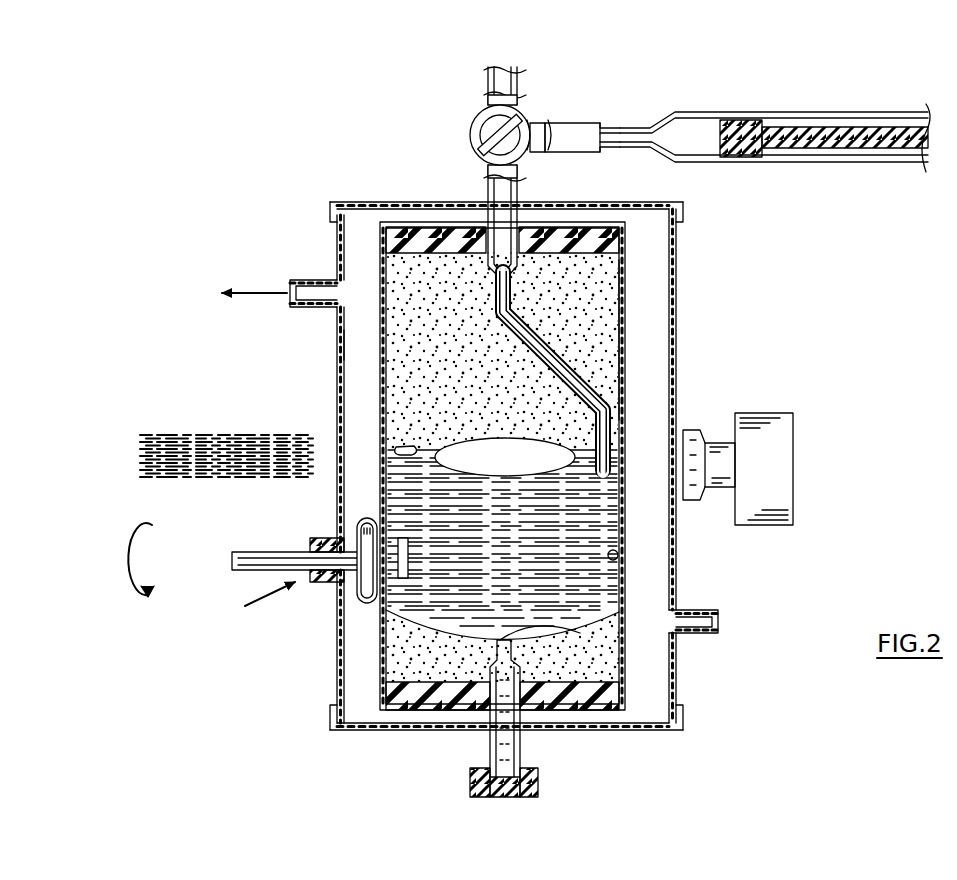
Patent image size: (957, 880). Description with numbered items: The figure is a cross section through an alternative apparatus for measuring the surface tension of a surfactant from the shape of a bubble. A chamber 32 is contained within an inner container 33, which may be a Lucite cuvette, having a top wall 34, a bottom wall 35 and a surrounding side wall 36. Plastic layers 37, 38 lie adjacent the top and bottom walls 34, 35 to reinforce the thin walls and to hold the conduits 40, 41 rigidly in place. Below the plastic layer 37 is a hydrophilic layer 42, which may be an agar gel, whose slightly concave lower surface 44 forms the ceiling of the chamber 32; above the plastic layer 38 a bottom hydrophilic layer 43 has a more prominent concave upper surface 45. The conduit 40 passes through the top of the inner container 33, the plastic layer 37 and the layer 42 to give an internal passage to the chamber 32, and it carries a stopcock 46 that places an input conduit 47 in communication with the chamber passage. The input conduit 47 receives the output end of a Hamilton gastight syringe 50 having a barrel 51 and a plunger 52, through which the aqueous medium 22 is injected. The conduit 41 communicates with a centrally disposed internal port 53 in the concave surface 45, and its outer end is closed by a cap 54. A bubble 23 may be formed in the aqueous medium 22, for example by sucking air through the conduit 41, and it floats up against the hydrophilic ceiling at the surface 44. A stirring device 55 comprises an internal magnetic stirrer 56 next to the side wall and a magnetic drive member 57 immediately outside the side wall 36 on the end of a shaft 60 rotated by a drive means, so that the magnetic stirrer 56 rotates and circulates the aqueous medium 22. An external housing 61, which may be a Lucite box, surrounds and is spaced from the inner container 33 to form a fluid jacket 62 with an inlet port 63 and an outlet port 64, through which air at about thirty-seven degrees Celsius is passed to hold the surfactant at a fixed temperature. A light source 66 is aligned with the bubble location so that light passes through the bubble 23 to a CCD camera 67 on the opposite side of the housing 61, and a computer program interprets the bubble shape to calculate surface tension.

The aqueous medium 22 is at (380, 490).
The bubble 23 is at (465, 450).
The chamber 32 is at (620, 556).
The inner container 33 is at (628, 340).
The top wall 34 is at (605, 210).
The bottom wall 35 is at (598, 718).
The side wall 36 is at (582, 634).
The plastic layer 37 is at (630, 258).
The plastic layer 38 is at (582, 700).
The conduit 40 is at (520, 200).
The conduit 41 is at (490, 745).
The hydrophilic layer 42 is at (615, 375).
The bottom hydrophilic layer 43 is at (395, 662).
The concave lower surface 44 is at (393, 447).
The concave upper surface 45 is at (403, 583).
The stopcock 46 is at (470, 133).
The input conduit 47 is at (570, 122).
The Hamilton gastight syringe 50 is at (805, 100).
The barrel 51 is at (740, 160).
The plunger 52 is at (820, 148).
The internal port 53 is at (585, 637).
The cap 54 is at (540, 793).
The stirring device 55 is at (211, 575).
The magnetic stirrer 56 is at (385, 603).
The magnetic drive member 57 is at (318, 545).
The shaft 60 is at (245, 566).
The external housing 61 is at (676, 298).
The fluid jacket 62 is at (350, 347).
The inlet port 63 is at (695, 611).
The outlet port 64 is at (310, 278).
The light source 66 is at (220, 440).
The CCD camera 67 is at (772, 412).